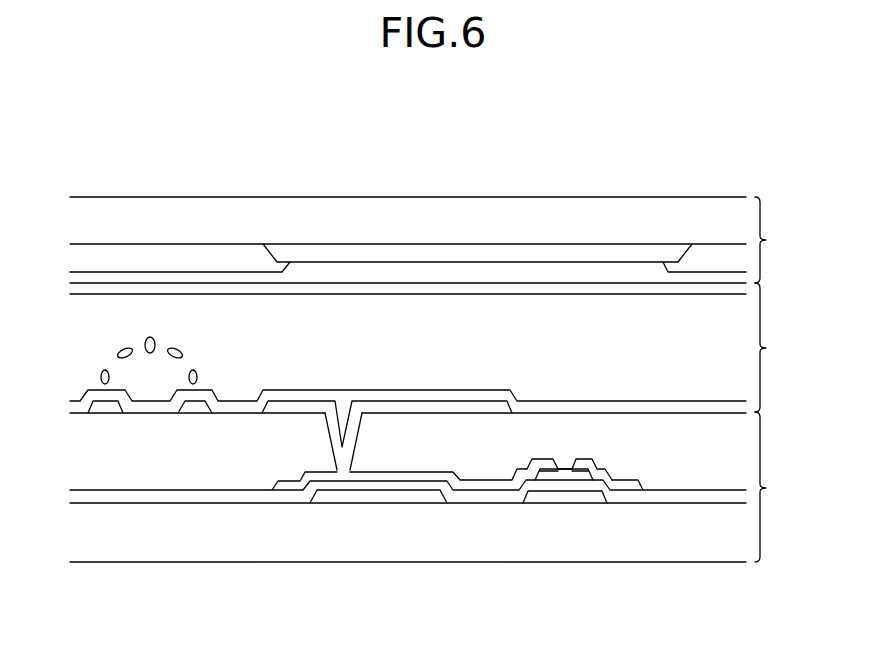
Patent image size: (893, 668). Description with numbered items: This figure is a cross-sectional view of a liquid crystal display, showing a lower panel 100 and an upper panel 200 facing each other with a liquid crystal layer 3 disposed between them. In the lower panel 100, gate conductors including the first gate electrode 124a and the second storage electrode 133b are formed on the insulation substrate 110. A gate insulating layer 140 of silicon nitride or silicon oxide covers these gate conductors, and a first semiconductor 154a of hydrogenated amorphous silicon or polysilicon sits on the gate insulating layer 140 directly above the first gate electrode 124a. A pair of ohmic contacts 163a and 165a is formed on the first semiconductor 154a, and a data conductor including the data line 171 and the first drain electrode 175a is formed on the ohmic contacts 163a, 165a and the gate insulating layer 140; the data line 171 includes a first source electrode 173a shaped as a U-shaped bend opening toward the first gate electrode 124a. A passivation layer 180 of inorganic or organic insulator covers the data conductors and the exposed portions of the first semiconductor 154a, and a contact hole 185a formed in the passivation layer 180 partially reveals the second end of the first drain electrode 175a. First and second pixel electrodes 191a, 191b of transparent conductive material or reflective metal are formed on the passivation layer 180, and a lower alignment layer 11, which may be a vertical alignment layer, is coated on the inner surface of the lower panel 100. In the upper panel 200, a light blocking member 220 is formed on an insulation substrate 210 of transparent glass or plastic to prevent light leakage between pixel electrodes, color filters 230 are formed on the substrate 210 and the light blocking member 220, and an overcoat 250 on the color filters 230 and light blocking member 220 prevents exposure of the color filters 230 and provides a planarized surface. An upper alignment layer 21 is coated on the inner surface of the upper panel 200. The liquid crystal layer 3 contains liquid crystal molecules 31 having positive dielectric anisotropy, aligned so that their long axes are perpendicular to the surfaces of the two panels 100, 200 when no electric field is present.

The upper alignment layer 21 is at (124, 290).
The color filter 230 is at (222, 258).
The light blocking member 220 is at (400, 255).
The insulation substrate 210 is at (530, 213).
The overcoat 250 is at (622, 268).
The upper panel 200 is at (781, 240).
The liquid crystal layer 3 is at (770, 347).
The liquid crystal molecules 31 is at (152, 337).
The first pixel electrode 191a is at (98, 405).
The second pixel electrode 191b is at (203, 410).
The contact hole 185a is at (330, 430).
The ohmic contact 163a is at (577, 457).
The ohmic contact 165a is at (552, 457).
The first source electrode 173a is at (590, 456).
The passivation layer 180 is at (689, 432).
The lower panel 100 is at (781, 487).
The lower alignment layer 11 is at (138, 407).
The gate insulating layer 140 is at (193, 497).
The second storage electrode 133b is at (385, 493).
The first drain electrode 175a is at (460, 483).
The first gate electrode 124a is at (557, 498).
The first semiconductor 154a is at (577, 476).
The data line 171 is at (633, 487).
The insulation substrate 110 is at (682, 537).